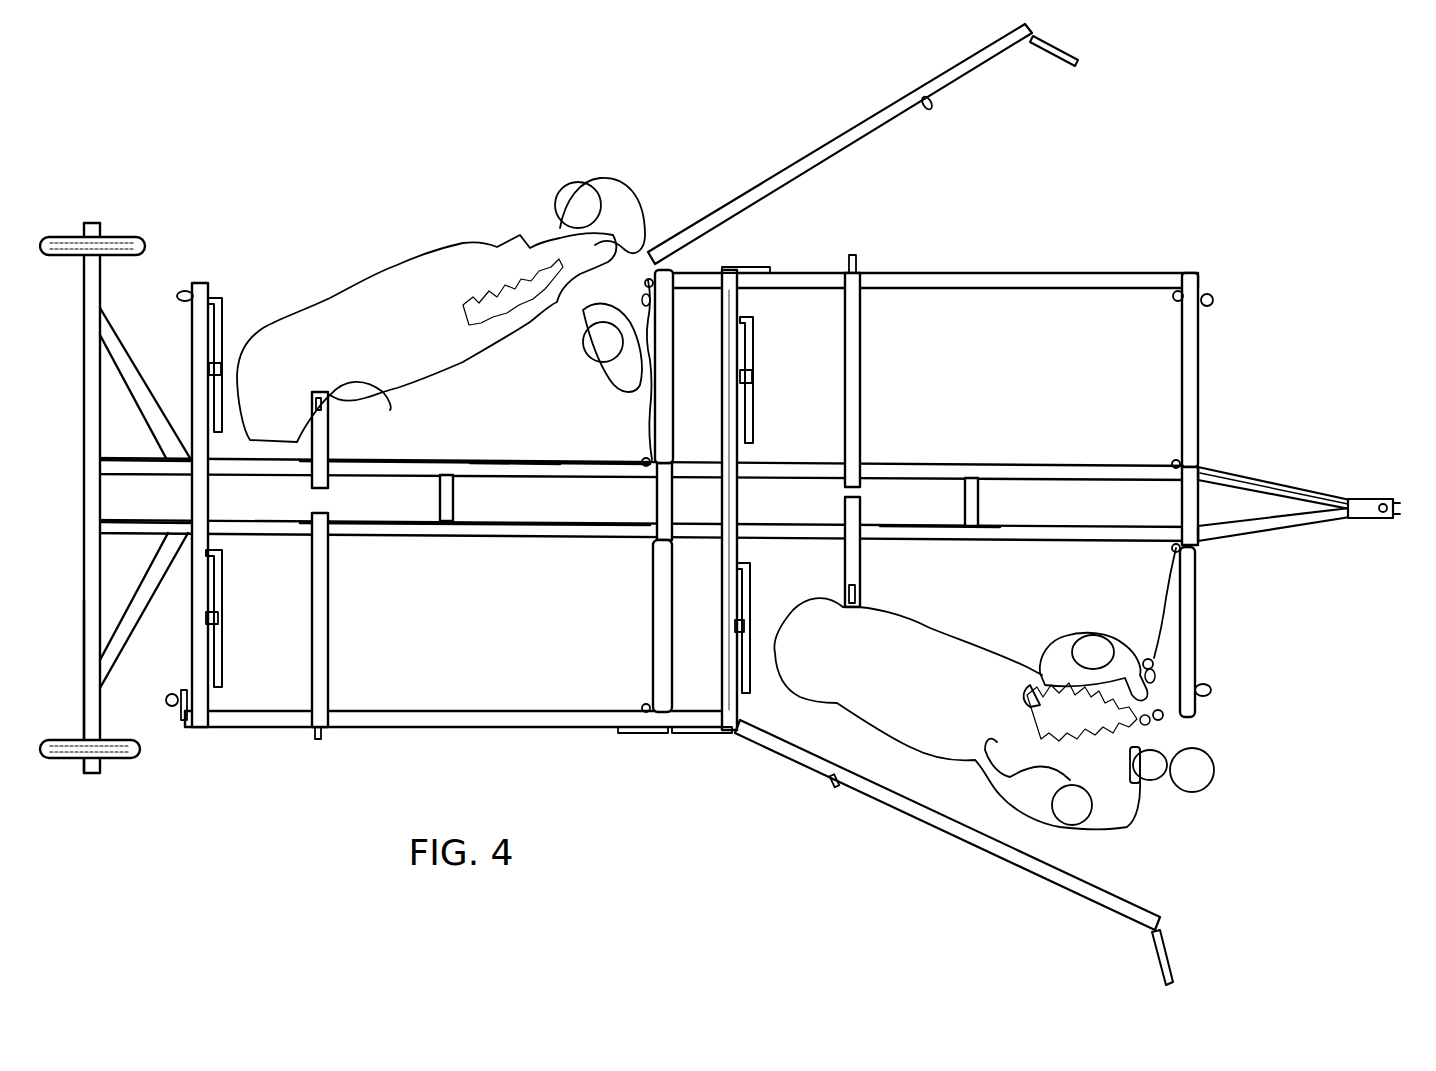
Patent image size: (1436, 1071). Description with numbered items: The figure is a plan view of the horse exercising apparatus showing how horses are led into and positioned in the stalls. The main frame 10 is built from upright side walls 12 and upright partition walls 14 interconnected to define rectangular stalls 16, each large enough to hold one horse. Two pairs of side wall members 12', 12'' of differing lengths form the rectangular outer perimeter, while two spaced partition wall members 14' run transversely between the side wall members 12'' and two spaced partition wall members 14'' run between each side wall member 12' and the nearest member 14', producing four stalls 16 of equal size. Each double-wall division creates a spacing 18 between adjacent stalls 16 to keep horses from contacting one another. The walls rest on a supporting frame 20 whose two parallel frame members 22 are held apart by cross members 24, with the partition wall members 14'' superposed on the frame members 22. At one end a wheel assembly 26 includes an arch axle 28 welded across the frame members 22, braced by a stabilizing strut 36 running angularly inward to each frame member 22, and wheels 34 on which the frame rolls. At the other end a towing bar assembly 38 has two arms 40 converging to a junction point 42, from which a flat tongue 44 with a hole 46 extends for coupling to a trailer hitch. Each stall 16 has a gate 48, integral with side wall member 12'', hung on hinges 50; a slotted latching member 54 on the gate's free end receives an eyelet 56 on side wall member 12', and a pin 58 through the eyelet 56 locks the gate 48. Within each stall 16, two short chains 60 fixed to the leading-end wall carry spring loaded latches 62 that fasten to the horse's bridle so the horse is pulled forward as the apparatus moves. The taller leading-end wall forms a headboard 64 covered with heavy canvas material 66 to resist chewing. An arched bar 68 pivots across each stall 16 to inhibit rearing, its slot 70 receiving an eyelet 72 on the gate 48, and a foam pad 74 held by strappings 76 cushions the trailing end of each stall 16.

The main frame 10 is at (470, 737).
The upright side wall 12 is at (704, 527).
The upright side wall member 12' is at (709, 505).
The upright side wall member 12'' is at (707, 509).
The upright partition wall 14 is at (710, 484).
The partition wall member 14' is at (650, 545).
The partition wall member 14'' is at (735, 496).
The stall 16 is at (326, 470).
The spacing 18 is at (400, 535).
The supporting frame 20 is at (140, 460).
The frame member 22 is at (148, 470).
The cross member 24 is at (440, 500).
The wheel assembly 26 is at (84, 620).
The arch axle 28 is at (84, 560).
The wheel 34 is at (112, 230).
The stabilizing strut 36 is at (135, 370).
The towing bar assembly 38 is at (1300, 488).
The arm 40 is at (1300, 525).
The junction point 42 is at (1365, 520).
The tongue 44 is at (1395, 510).
The hole 46 is at (1388, 505).
The gate 48 is at (500, 728).
The hinge 50 is at (640, 735).
The slotted latching member 54 is at (192, 728).
The eyelet 56 is at (187, 292).
The pin 58 is at (172, 695).
The chain 60 is at (1168, 560).
The spring loaded latch 62 is at (1170, 680).
The headboard 64 is at (652, 615).
The canvas material 66 is at (672, 680).
The arched bar 68 is at (312, 452).
The slot 70 is at (390, 402).
The eyelet 72 is at (318, 740).
The foam pad 74 is at (222, 395).
The strapping 76 is at (222, 365).